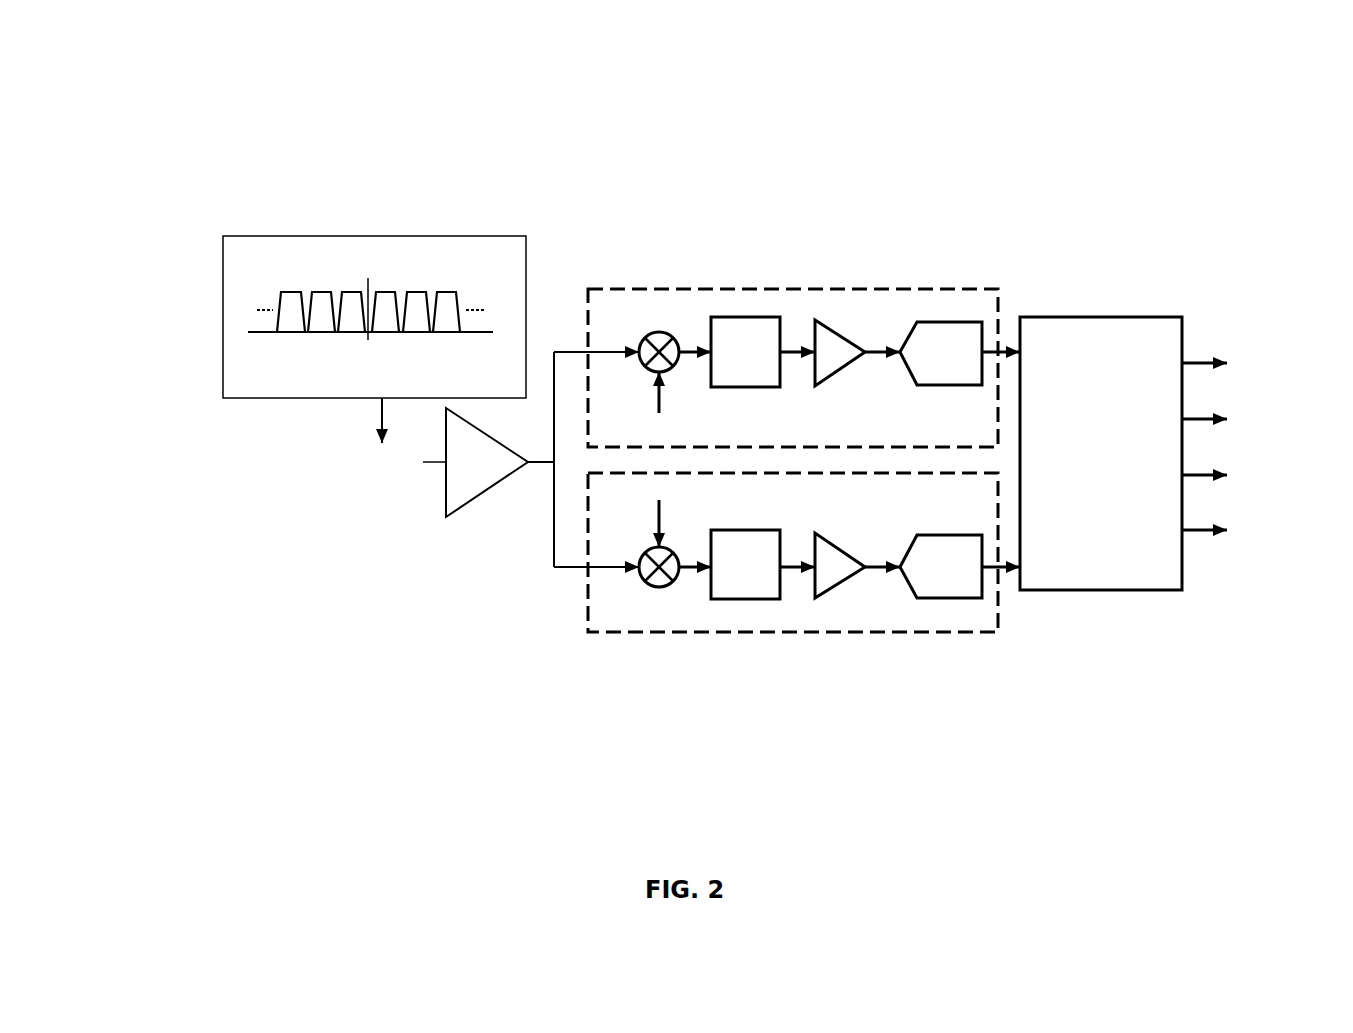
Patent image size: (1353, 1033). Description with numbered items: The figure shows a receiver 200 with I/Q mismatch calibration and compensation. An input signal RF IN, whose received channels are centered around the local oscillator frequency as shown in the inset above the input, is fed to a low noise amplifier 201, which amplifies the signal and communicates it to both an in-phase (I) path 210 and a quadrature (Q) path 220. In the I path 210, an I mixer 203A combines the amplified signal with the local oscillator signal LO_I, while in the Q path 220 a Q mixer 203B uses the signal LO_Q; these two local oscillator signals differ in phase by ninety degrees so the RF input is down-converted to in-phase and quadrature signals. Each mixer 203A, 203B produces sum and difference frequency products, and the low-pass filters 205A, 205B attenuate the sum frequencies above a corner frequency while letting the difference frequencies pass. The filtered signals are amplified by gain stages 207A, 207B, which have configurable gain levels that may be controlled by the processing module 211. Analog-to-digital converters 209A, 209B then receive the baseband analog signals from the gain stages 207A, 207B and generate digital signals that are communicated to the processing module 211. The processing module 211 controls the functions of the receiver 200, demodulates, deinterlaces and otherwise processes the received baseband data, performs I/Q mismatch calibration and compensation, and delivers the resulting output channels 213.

The receiver 200 is at (262, 98).
The low noise amplifier (LNA) 201 is at (487, 462).
The I mixer 203A is at (659, 332).
The Q mixer 203B is at (659, 587).
The low-pass filter 205A is at (745, 352).
The low-pass filter 205B is at (745, 564).
The gain stage 207A is at (850, 340).
The gain stage 207B is at (845, 585).
The analog-to-digital converter (ADC) 209A is at (941, 353).
The analog-to-digital converter (ADC) 209B is at (941, 566).
The in-phase (I) path 210 is at (804, 347).
The processing module 211 is at (1101, 453).
The output channels 213 is at (1239, 403).
The quadrature (Q) path 220 is at (804, 574).